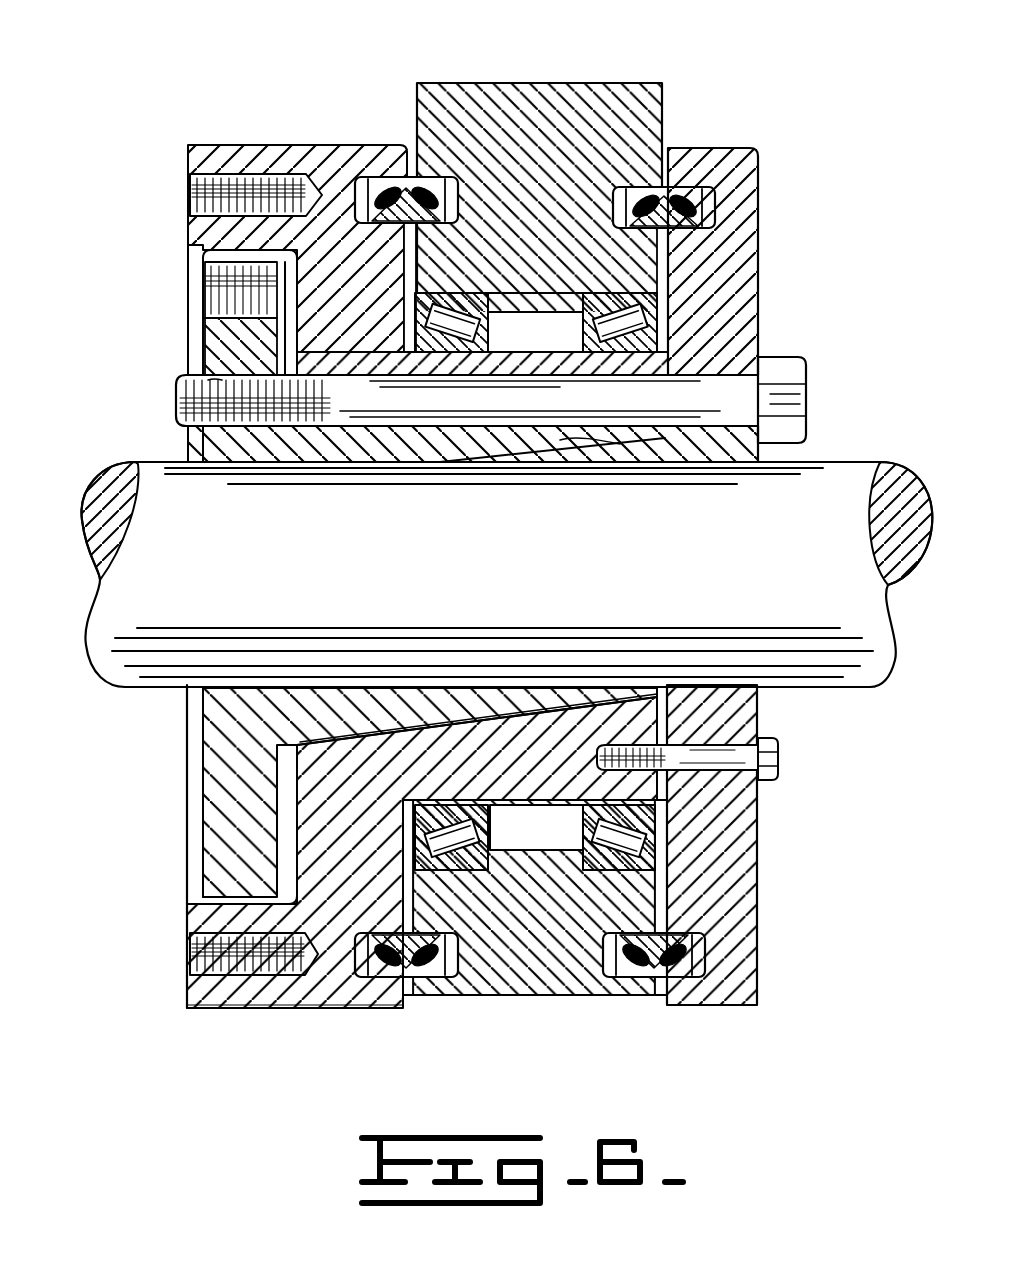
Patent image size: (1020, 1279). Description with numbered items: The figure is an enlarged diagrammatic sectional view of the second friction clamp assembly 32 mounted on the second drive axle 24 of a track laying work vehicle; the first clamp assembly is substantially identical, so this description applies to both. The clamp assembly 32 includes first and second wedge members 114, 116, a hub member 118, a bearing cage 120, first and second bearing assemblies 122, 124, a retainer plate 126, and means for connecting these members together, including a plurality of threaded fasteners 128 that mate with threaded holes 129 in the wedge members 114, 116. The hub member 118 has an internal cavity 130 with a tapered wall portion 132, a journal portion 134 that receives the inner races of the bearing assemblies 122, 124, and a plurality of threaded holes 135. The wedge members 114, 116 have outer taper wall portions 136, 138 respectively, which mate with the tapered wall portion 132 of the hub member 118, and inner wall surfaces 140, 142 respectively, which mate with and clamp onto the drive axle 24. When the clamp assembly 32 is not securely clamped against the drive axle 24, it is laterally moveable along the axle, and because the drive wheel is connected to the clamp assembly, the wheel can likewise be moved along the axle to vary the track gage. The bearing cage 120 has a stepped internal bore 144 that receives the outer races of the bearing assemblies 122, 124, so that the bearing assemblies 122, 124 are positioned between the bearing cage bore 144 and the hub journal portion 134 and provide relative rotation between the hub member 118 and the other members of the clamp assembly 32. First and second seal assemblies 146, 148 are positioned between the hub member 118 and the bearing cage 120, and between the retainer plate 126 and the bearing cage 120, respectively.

The second drive axle 24 is at (286, 567).
The second friction clamp assembly 32 is at (156, 1000).
The first wedge member 114 is at (210, 330).
The second wedge member 116 is at (206, 745).
The hub member 118 is at (276, 146).
The bearing cage 120 is at (548, 90).
The first bearing assembly 122 is at (470, 302).
The second bearing assembly 124 is at (618, 300).
The retainer plate 126 is at (760, 272).
The threaded fasteners 128 is at (790, 392).
The threaded holes 129 is at (220, 378).
The internal cavity 130 is at (548, 740).
The tapered wall portion 132 is at (432, 745).
The journal portion 134 is at (566, 812).
The threaded holes 135 is at (204, 190).
The outer taper wall portion 136 is at (590, 448).
The outer taper wall portion 138 is at (416, 748).
The inner wall surface 140 is at (450, 463).
The inner wall surface 142 is at (348, 690).
The stepped internal bore 144 is at (540, 852).
The first seal assembly 146 is at (402, 192).
The second seal assembly 148 is at (687, 188).